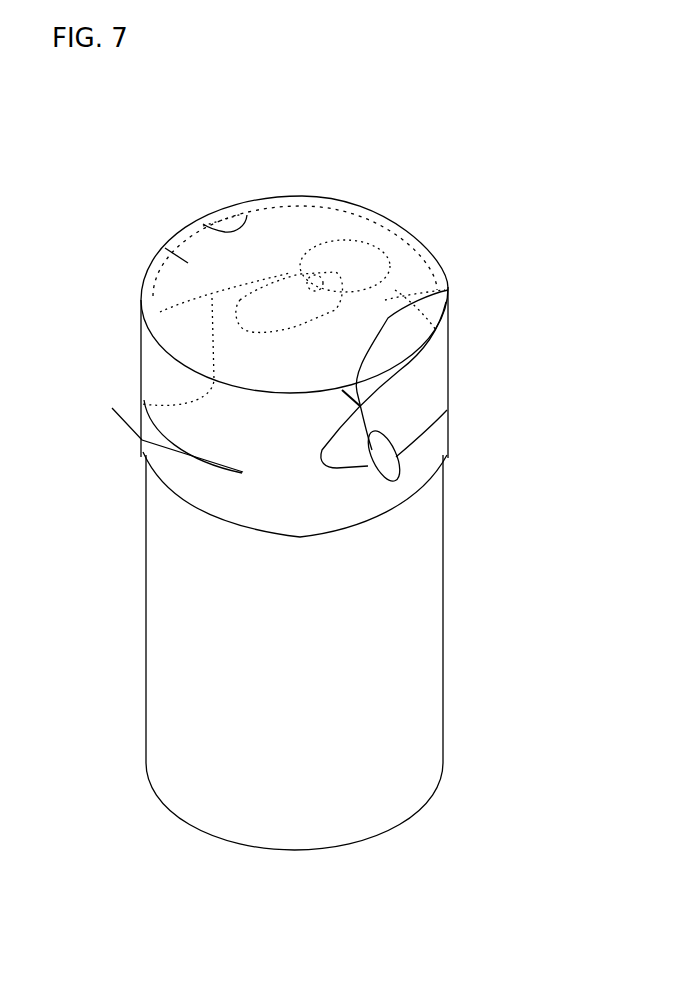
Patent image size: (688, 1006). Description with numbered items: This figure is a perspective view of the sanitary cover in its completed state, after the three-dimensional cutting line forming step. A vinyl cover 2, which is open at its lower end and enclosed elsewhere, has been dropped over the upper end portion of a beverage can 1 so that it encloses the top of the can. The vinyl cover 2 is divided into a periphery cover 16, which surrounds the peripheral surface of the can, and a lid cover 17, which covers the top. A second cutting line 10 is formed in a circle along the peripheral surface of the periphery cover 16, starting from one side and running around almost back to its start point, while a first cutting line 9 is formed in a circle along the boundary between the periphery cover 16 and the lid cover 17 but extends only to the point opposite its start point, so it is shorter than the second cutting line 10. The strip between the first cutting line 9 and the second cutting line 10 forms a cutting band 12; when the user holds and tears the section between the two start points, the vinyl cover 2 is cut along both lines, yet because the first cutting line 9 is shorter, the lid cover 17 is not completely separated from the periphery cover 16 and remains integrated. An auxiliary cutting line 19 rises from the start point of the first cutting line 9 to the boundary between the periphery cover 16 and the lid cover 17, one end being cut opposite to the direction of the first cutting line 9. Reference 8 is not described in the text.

The beverage can 1 is at (420, 680).
The vinyl cover 2 is at (380, 538).
The notch 8 is at (247, 215).
The first cutting line 9 is at (448, 357).
The second cutting line 10 is at (448, 410).
The cutting band 12 is at (410, 420).
The periphery cover 16 is at (262, 498).
The lid cover 17 is at (164, 247).
The auxiliary cutting line 19 is at (448, 292).